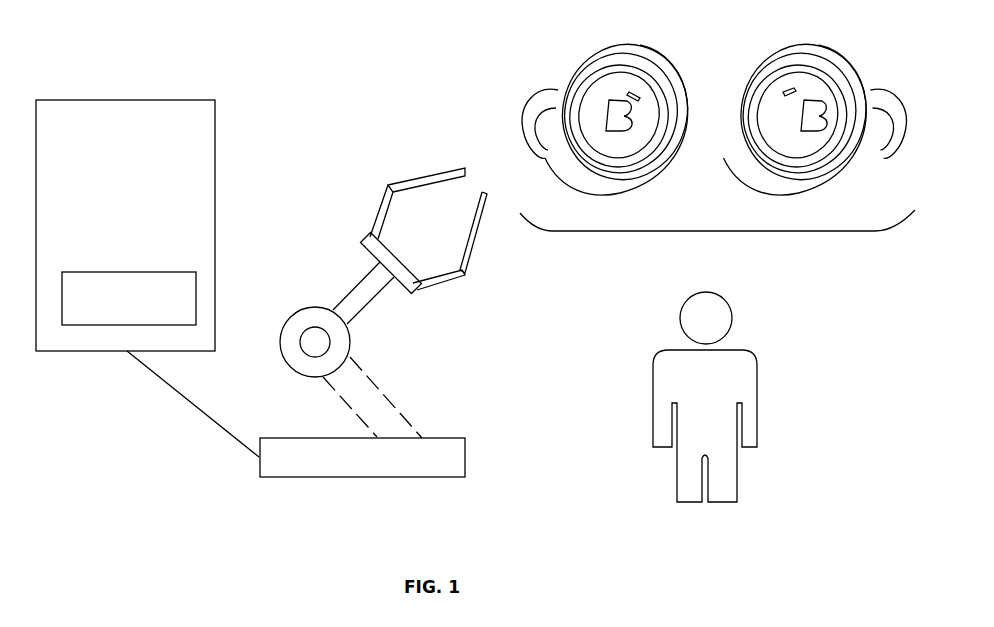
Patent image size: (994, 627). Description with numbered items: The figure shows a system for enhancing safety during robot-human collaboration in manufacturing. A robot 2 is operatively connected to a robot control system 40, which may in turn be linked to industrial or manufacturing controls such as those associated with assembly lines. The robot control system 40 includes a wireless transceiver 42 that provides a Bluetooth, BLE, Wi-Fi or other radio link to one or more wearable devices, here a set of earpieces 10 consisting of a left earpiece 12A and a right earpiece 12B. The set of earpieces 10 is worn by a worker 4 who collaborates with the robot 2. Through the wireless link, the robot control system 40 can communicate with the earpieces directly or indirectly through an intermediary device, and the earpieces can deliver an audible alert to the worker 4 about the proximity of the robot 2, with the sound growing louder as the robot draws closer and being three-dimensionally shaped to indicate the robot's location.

The robot 2 is at (455, 437).
The worker 4 is at (668, 377).
The set of earpieces 10 is at (704, 231).
The left earpiece 12A is at (625, 41).
The right earpiece 12B is at (807, 44).
The robot control system 40 is at (125, 225).
The wireless transceiver 42 is at (129, 298).